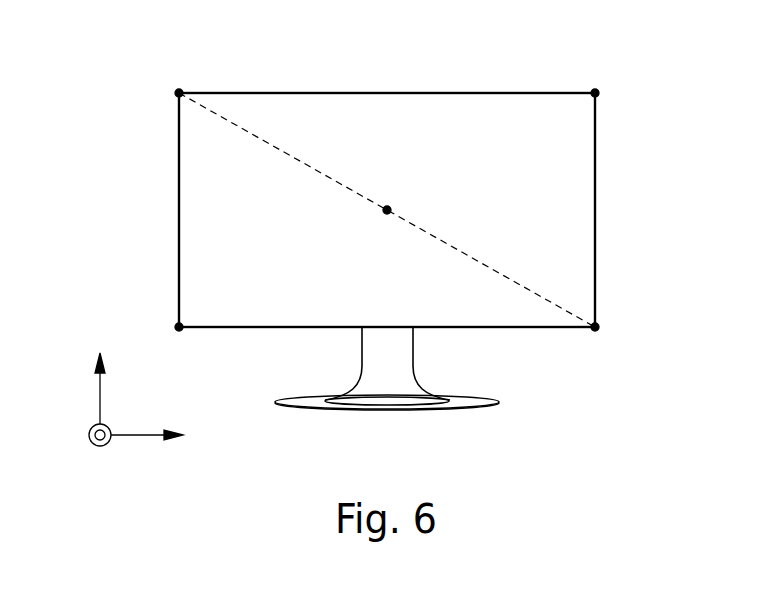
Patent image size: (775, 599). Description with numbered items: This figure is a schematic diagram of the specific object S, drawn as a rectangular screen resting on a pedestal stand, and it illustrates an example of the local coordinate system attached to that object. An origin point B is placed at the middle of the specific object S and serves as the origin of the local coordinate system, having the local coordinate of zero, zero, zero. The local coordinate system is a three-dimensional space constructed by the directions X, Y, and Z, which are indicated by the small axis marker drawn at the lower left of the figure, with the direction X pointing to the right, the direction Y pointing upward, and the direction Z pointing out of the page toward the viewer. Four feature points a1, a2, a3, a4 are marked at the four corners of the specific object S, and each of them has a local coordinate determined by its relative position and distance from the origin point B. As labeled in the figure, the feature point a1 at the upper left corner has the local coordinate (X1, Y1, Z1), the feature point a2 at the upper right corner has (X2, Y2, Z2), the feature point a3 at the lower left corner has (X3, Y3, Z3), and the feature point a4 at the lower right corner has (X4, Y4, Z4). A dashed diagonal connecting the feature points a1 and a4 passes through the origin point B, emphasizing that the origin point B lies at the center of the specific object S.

The specific object S is at (595, 225).
The origin point B is at (445, 196).
The feature point a1 is at (256, 74).
The feature point a2 is at (673, 74).
The feature point a3 is at (256, 346).
The feature point a4 is at (671, 346).
The direction X is at (159, 434).
The direction Y is at (98, 372).
The direction Z is at (89, 449).